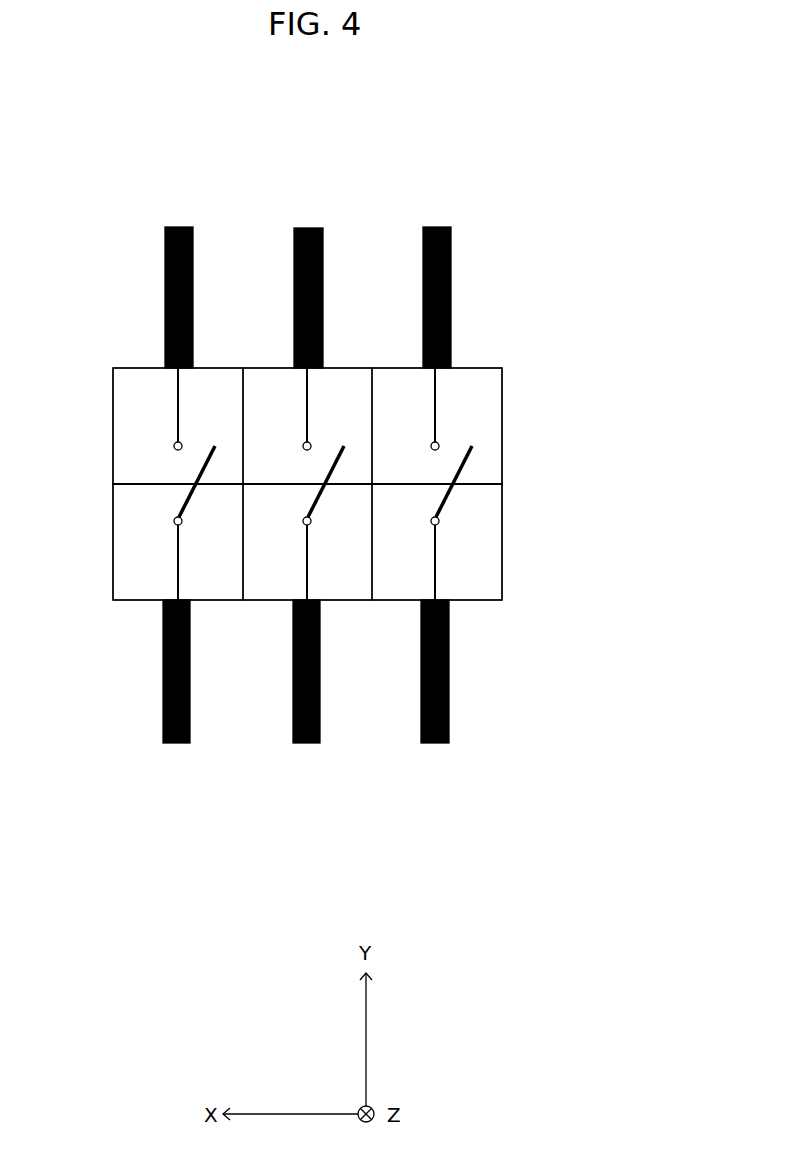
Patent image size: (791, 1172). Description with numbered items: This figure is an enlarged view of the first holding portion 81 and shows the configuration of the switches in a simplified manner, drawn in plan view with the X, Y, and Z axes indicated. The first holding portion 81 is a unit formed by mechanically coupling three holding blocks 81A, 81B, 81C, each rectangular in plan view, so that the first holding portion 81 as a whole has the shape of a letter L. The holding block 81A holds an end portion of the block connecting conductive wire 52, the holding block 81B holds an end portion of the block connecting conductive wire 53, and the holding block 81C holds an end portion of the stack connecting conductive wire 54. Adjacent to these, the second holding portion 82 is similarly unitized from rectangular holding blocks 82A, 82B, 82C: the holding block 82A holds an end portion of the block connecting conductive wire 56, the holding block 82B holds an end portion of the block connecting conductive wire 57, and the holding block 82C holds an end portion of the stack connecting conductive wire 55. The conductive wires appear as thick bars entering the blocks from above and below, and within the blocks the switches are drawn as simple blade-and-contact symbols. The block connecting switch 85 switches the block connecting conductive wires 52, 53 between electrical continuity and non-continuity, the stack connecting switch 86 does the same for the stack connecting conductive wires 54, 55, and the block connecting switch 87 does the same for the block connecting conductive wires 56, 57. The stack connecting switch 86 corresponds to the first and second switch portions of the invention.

The block connecting conductive wire 52 is at (163, 675).
The block connecting conductive wire 53 is at (165, 298).
The stack connecting conductive wire 54 is at (323, 267).
The stack connecting conductive wire 55 is at (293, 678).
The block connecting conductive wire 56 is at (452, 295).
The block connecting conductive wire 57 is at (449, 672).
The first holding portion 81 is at (228, 353).
The holding block 81A is at (113, 557).
The holding block 81B is at (113, 430).
The holding block 81C is at (340, 367).
The second holding portion 82 is at (508, 573).
The holding block 82A is at (502, 408).
The holding block 82B is at (502, 537).
The holding block 82C is at (275, 600).
The block connecting switch 85 is at (180, 471).
The stack connecting switch 86 is at (333, 500).
The block connecting switch 87 is at (482, 465).